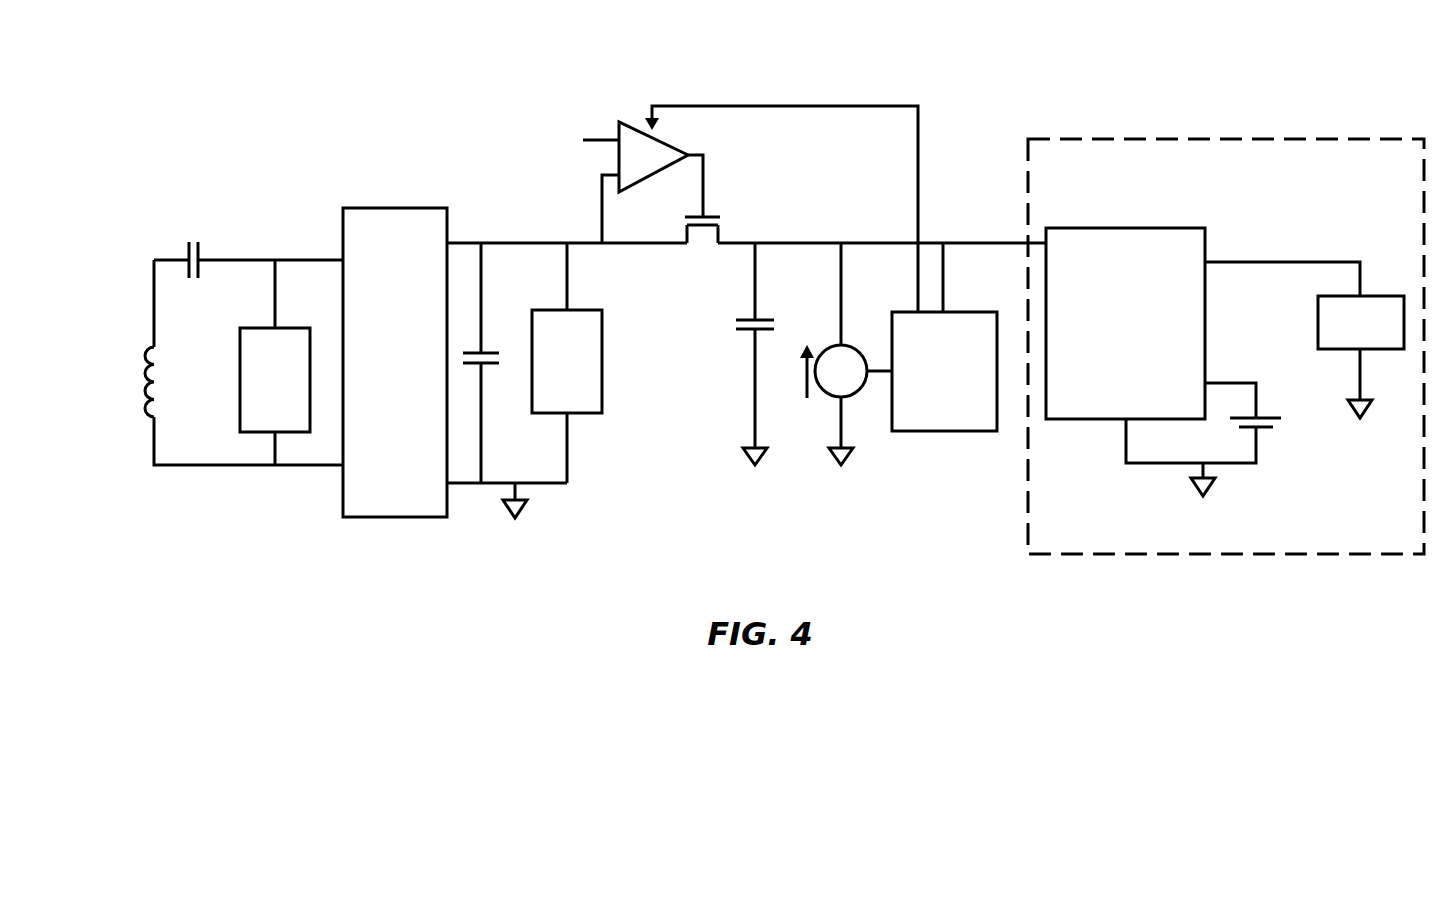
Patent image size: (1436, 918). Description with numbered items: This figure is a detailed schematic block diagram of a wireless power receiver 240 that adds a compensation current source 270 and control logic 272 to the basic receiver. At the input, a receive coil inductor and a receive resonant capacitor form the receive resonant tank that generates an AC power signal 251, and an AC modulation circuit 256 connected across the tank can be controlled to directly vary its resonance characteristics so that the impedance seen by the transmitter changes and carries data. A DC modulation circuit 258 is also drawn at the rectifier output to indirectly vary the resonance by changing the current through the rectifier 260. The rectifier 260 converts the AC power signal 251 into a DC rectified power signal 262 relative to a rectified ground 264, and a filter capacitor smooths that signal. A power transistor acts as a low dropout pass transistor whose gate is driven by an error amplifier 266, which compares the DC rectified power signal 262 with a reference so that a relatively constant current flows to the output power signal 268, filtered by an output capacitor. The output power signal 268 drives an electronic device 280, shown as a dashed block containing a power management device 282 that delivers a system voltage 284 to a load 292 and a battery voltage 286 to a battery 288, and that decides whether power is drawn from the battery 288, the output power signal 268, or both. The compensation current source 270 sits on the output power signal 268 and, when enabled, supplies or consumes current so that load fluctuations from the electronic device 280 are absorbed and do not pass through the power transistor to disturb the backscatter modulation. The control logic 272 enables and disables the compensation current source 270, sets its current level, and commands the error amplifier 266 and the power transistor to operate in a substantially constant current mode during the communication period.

The wireless power receiver 240 is at (652, 63).
The AC power signal 251 is at (252, 260).
The AC modulation circuit 256 is at (298, 328).
The DC modulator 258 is at (589, 310).
The rectifier 260 is at (398, 208).
The DC rectified power signal 262 is at (519, 243).
The rectified ground 264 is at (551, 484).
The error amplifier 266 is at (628, 187).
The output power signal 268 is at (787, 243).
The compensation current source 270 is at (855, 394).
The control logic 272 is at (972, 312).
The electronic device 280 is at (1232, 139).
The power management device 282 is at (1139, 228).
The system voltage node Vsys 284 is at (1276, 262).
The battery voltage node Vbat 286 is at (1243, 383).
The battery 288 is at (1283, 418).
The load 292 is at (1400, 350).